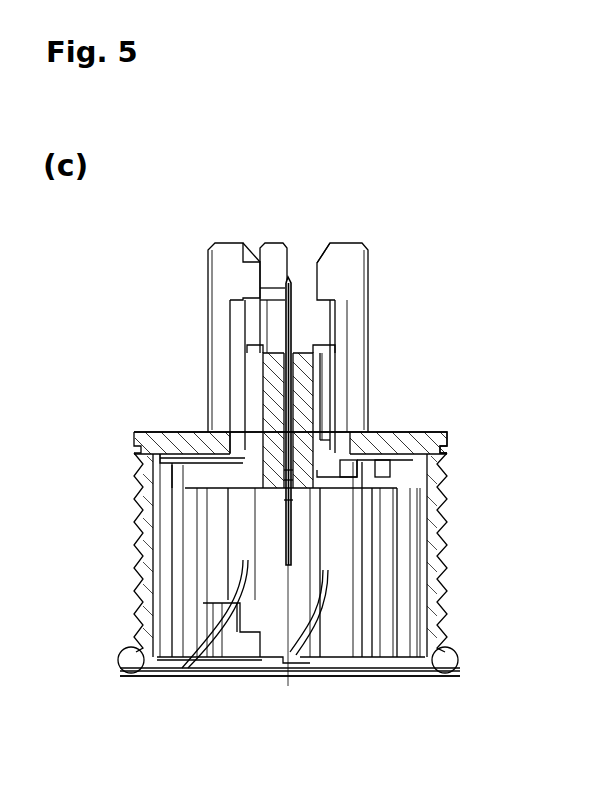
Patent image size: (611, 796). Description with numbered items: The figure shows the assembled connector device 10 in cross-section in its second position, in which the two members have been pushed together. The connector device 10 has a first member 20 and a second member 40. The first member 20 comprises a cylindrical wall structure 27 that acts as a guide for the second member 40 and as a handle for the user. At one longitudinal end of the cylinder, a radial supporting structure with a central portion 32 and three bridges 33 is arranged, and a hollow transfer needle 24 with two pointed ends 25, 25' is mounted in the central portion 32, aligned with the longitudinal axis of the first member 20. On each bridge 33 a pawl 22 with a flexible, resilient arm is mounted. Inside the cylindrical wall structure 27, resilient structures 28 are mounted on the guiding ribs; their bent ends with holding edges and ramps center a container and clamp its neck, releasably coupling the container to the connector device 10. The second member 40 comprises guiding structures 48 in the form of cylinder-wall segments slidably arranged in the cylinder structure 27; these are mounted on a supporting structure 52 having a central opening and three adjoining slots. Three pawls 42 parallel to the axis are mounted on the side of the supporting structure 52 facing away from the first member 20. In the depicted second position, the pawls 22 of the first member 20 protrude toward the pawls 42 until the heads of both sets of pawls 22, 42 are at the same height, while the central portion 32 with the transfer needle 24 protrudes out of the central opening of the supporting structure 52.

The connector device 10 is at (290, 362).
The first member 20 is at (347, 552).
The pawl 22 is at (272, 244).
The hollow transfer needle 24 is at (367, 420).
The pointed end 25 is at (194, 517).
The pointed end 25' is at (328, 359).
The cylindrical wall structure 27 is at (290, 699).
The resilient structure 28 is at (284, 620).
The central portion 32 is at (364, 372).
The bridge 33 is at (216, 471).
The second member 40 is at (210, 376).
The pawl 42 is at (317, 294).
The guiding structure 48 is at (469, 541).
The supporting structure 52 is at (248, 395).